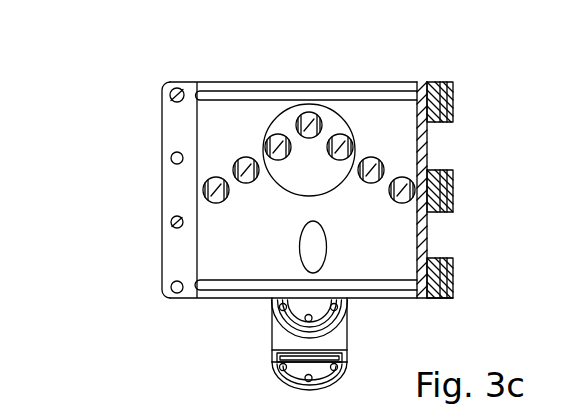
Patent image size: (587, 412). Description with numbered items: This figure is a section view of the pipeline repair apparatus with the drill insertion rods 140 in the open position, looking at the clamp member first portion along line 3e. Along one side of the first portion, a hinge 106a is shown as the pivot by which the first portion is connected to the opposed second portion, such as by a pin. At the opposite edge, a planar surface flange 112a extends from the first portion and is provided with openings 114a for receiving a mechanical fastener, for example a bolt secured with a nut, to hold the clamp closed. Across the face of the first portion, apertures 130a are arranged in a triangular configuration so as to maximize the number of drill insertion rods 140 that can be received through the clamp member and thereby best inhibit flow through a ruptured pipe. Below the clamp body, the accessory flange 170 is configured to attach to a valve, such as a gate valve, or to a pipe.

The detail circle 3e is at (273, 113).
The apertures 130a is at (368, 110).
The openings 114a is at (169, 157).
The planar surface flange 112a is at (173, 260).
The drill insertion rods 140 is at (372, 166).
The hinge 106a is at (453, 274).
The accessory flange 170 is at (370, 354).